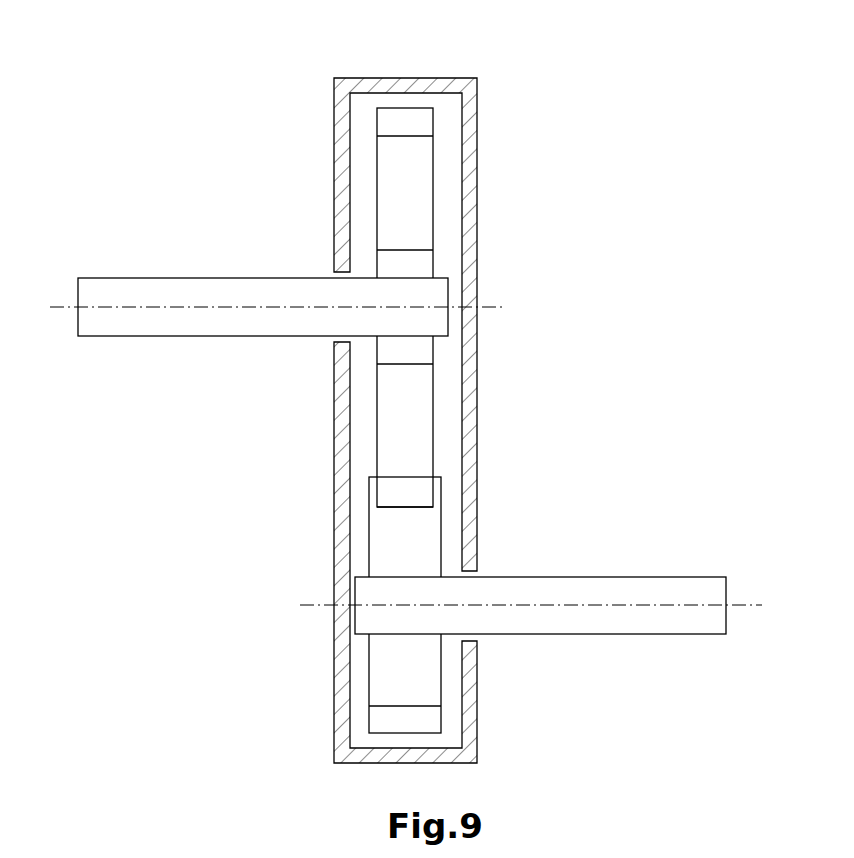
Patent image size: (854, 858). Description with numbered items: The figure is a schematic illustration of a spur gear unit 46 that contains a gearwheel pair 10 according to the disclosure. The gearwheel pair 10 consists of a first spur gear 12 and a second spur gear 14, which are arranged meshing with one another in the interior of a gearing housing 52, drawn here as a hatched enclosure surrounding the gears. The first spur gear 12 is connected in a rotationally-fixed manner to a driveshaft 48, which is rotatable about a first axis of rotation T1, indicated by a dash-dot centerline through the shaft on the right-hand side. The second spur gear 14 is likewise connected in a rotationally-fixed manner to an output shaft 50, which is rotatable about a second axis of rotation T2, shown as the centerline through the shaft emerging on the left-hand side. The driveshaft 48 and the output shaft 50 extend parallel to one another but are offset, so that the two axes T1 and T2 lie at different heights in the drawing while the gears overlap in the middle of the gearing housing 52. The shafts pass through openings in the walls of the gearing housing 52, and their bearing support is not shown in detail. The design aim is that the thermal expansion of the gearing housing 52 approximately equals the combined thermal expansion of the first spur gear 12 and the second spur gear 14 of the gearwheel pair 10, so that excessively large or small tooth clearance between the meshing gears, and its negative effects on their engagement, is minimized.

The gearwheel pair 10 is at (451, 457).
The first spur gear 12 is at (385, 653).
The second spur gear 14 is at (390, 383).
The spur gear unit 46 is at (612, 90).
The driveshaft 48 is at (612, 577).
The output shaft 50 is at (110, 277).
The gearing housing 52 is at (477, 183).
The first axis of rotation T1 is at (747, 612).
The second axis of rotation T2 is at (57, 312).